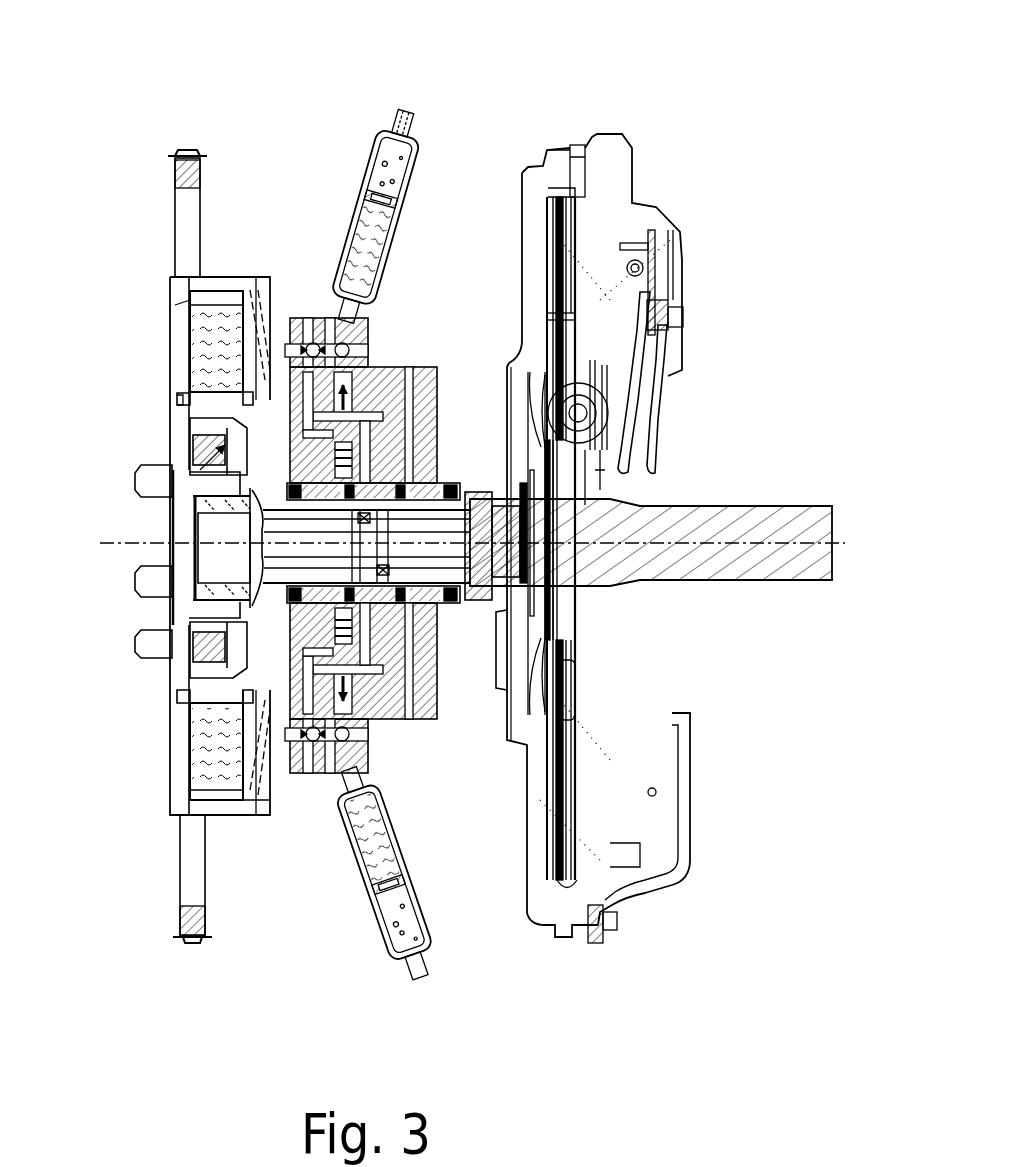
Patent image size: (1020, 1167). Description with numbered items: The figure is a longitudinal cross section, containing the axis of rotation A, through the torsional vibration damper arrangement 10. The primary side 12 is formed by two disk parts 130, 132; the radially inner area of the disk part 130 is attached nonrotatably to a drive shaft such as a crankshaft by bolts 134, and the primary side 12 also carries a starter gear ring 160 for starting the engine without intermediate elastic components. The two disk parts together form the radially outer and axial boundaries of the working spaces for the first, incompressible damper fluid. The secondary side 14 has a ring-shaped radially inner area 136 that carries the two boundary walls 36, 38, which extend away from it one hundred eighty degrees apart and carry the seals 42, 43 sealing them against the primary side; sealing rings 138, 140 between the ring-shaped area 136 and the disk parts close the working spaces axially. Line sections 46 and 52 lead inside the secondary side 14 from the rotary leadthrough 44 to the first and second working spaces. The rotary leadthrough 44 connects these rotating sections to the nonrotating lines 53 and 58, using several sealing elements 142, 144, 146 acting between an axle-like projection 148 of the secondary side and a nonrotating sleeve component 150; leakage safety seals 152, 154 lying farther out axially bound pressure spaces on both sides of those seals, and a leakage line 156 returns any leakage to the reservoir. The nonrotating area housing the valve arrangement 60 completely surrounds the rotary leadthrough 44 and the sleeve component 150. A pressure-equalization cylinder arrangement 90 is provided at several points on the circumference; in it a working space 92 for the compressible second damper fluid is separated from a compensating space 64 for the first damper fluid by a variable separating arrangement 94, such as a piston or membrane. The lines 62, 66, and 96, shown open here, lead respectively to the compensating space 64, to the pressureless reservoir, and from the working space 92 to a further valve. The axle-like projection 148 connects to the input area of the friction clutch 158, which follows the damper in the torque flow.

The torsional vibration damper arrangement 10 is at (300, 110).
The primary side 12 is at (152, 302).
The secondary side 14 is at (205, 500).
The boundary wall 36 is at (210, 320).
The boundary wall 38 is at (207, 775).
The seal 42 is at (212, 295).
The seal 43 is at (232, 816).
The rotary leadthrough 44 is at (420, 480).
The line section 46 is at (540, 522).
The line section 52 is at (510, 540).
The line 53 is at (388, 365).
The line 58 is at (405, 420).
The valve arrangement 60 is at (250, 520).
The line 62 is at (362, 377).
The compensating space 64 is at (385, 272).
The line 66 is at (302, 318).
The pressure-equalization cylinder arrangement 90 is at (368, 185).
The working space 92 is at (395, 165).
The variable separating arrangement 94 is at (407, 190).
The line 96 is at (405, 122).
The disk part 130 is at (178, 680).
The disk part 132 is at (268, 800).
The bolts 134 is at (140, 652).
The ring-shaped radially inner area 136 is at (212, 415).
The sealing ring 138 is at (200, 358).
The sealing ring 140 is at (183, 400).
The sealing element 142 is at (437, 628).
The sealing element 144 is at (430, 662).
The sealing element 146 is at (420, 722).
The axle-like projection 148 is at (568, 515).
The sleeve component 150 is at (594, 440).
The leakage safety seal 152 is at (487, 560).
The leakage safety seal 154 is at (252, 690).
The leakage line 156 is at (460, 645).
The friction clutch 158 is at (655, 188).
The starter gear ring 160 is at (193, 172).
The axis of rotation A is at (765, 543).